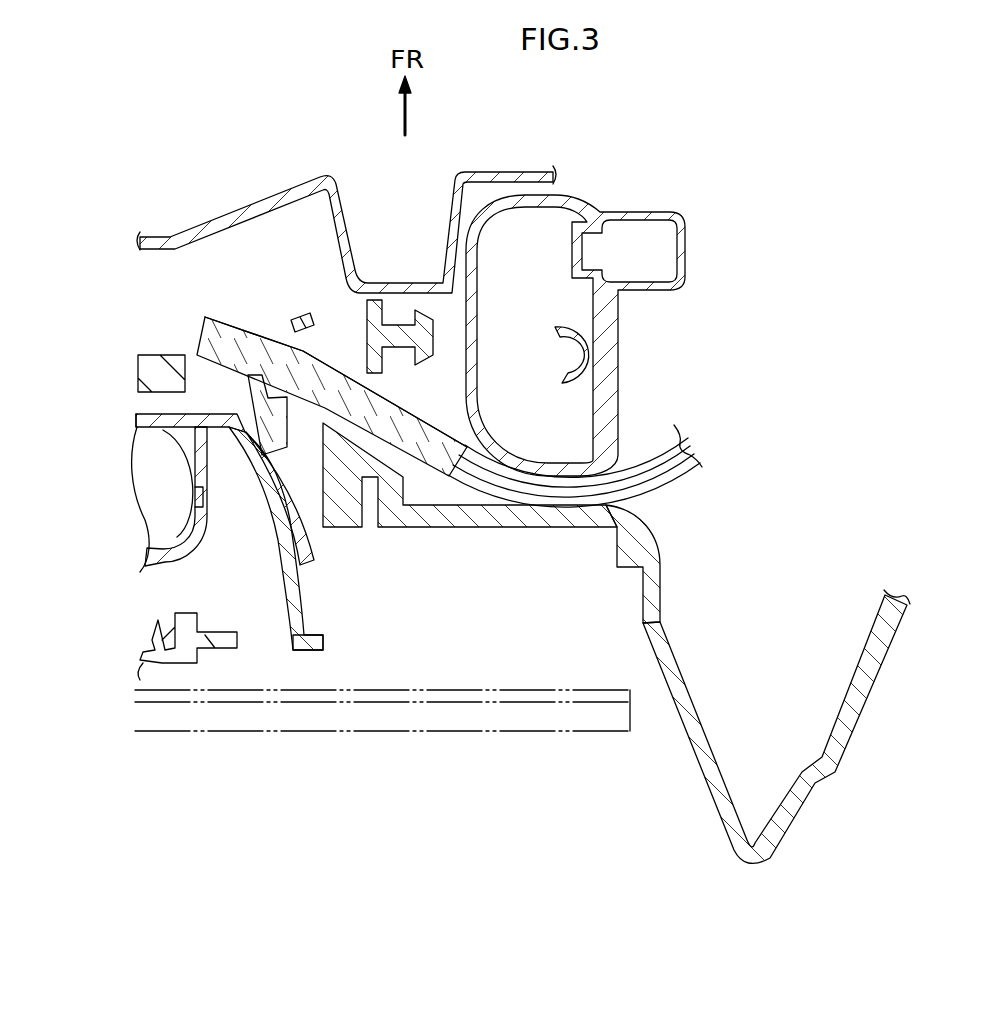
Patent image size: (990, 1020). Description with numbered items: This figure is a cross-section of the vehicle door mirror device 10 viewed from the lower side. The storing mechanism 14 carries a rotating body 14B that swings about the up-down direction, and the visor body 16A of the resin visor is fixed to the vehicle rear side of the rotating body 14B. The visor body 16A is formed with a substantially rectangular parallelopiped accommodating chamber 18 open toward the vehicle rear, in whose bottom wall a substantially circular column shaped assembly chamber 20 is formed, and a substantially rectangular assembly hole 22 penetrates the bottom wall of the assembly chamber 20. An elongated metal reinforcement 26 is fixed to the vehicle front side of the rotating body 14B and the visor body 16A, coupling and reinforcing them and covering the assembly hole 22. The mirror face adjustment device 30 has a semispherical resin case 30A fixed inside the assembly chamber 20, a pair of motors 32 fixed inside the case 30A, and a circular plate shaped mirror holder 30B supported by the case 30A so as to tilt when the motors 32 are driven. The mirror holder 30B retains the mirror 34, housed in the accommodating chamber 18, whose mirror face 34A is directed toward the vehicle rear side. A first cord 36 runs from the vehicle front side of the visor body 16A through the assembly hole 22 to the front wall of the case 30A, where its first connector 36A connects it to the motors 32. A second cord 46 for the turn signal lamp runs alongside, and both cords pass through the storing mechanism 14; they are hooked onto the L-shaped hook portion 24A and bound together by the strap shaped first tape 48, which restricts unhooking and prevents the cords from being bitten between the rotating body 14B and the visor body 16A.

The vehicle door structure 10 is at (130, 137).
The storing mechanism 14 is at (575, 335).
The rotating body 14B is at (415, 310).
The visor body 16A is at (868, 703).
The accommodating chamber 18 is at (684, 724).
The assembly chamber 20 is at (320, 520).
The assembly hole 22 is at (198, 352).
The hook portion 24A is at (300, 318).
The reinforcement 26 is at (327, 177).
The mirror face adjustment device 30 is at (312, 560).
The case 30A is at (140, 412).
The mirror holder 30B is at (324, 643).
The motor 32 is at (198, 414).
The mirror 34 is at (222, 733).
The mirror face 34A is at (455, 702).
The first cord 36 is at (665, 483).
The first connector 36A is at (145, 355).
The second cord 46 is at (662, 447).
The first tape 48 is at (250, 335).